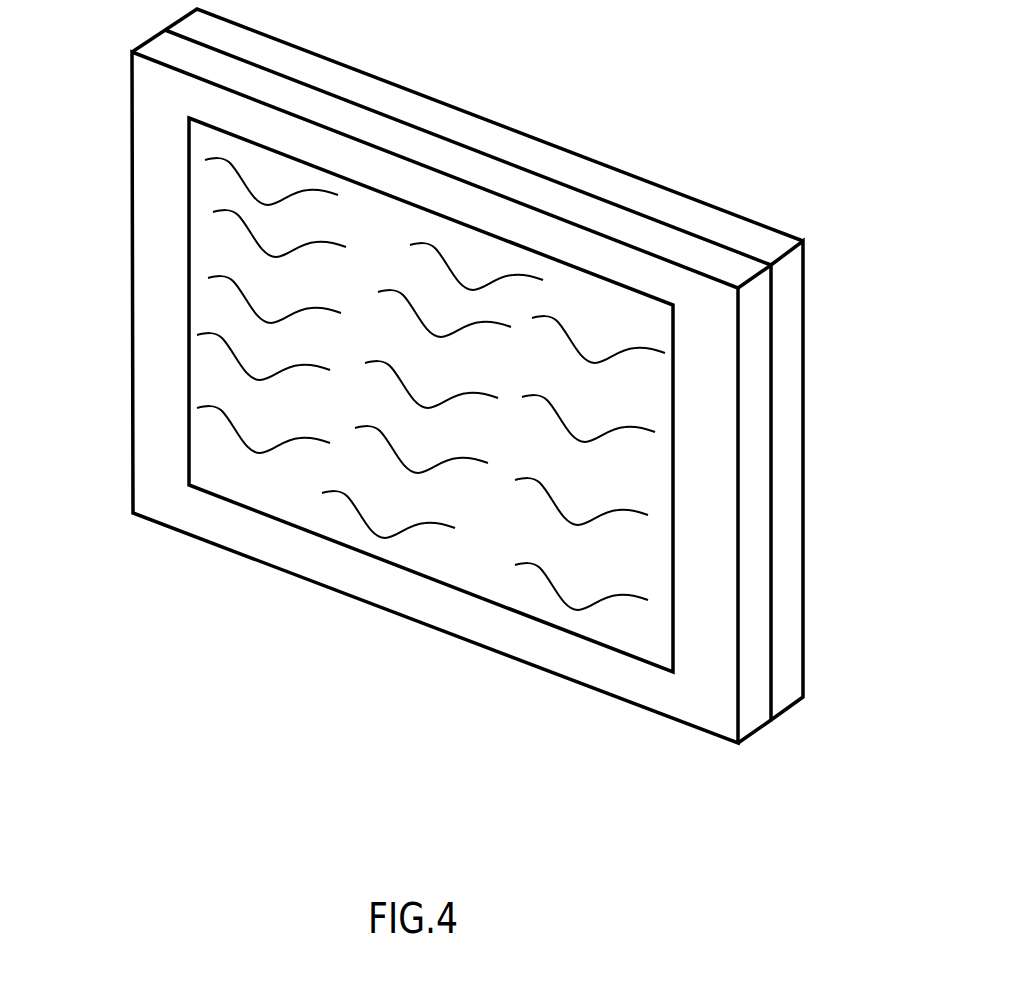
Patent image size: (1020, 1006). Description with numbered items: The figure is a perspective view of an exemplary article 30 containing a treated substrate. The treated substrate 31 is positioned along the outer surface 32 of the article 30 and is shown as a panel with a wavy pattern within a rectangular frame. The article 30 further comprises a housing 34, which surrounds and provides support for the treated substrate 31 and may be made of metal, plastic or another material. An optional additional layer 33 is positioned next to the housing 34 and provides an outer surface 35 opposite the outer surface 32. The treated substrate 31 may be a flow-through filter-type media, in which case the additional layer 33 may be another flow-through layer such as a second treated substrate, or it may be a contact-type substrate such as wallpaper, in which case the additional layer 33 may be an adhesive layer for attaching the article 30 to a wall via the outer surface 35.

The article 30 is at (475, 411).
The treated substrate 31 is at (506, 519).
The outer surface 32 is at (697, 702).
The optional additional layer 33 is at (785, 605).
The housing 34 is at (755, 437).
The outer surface 35 is at (805, 285).